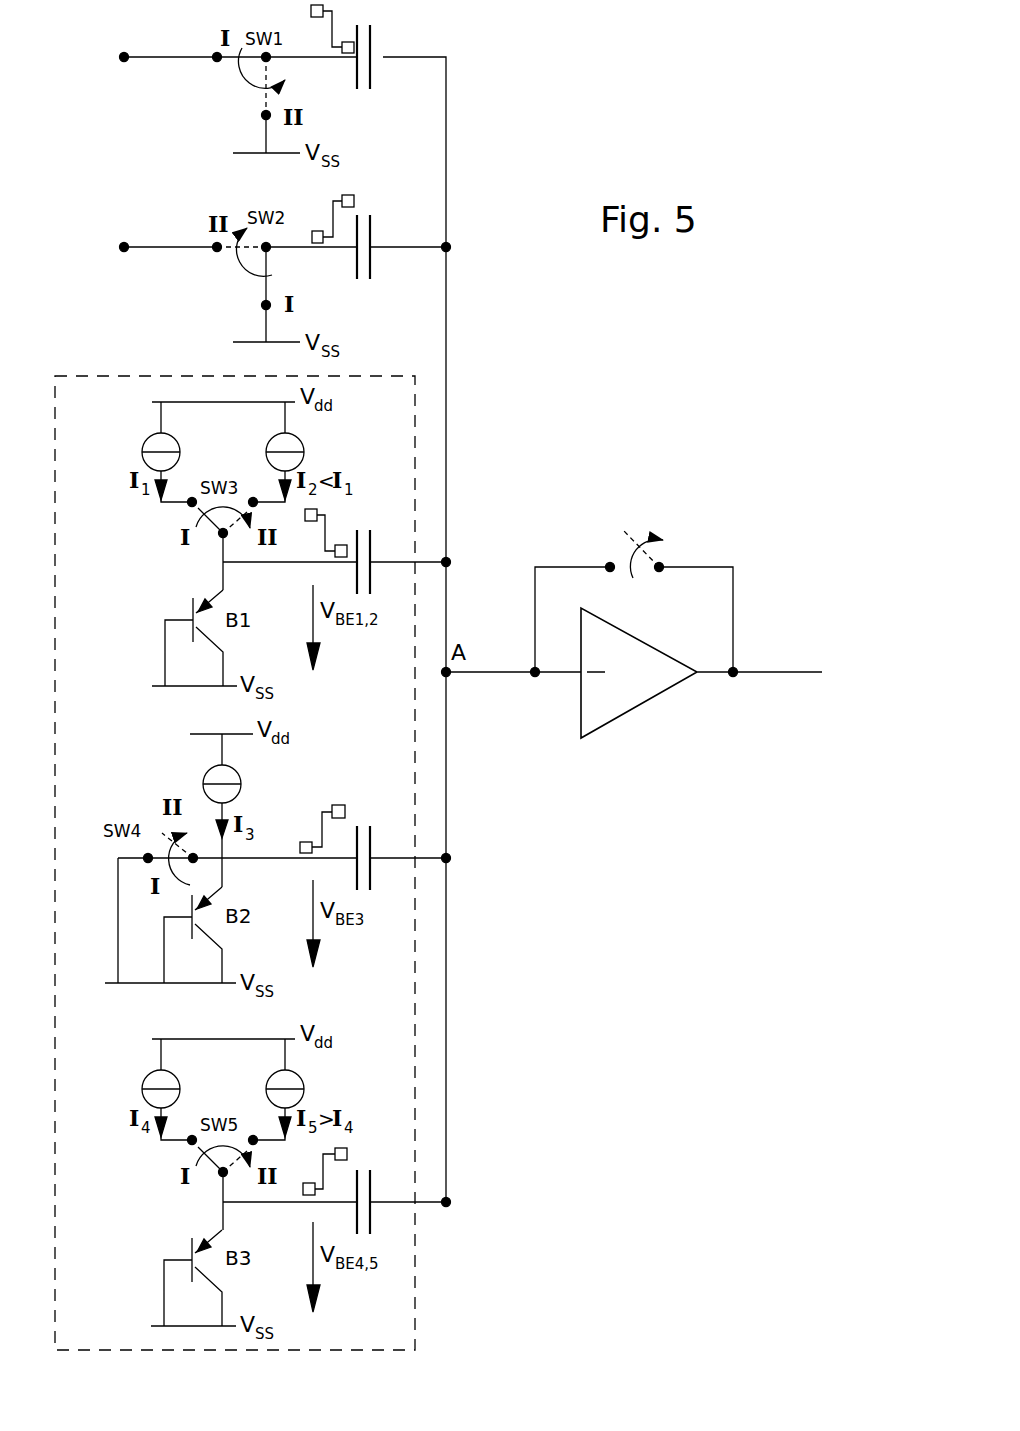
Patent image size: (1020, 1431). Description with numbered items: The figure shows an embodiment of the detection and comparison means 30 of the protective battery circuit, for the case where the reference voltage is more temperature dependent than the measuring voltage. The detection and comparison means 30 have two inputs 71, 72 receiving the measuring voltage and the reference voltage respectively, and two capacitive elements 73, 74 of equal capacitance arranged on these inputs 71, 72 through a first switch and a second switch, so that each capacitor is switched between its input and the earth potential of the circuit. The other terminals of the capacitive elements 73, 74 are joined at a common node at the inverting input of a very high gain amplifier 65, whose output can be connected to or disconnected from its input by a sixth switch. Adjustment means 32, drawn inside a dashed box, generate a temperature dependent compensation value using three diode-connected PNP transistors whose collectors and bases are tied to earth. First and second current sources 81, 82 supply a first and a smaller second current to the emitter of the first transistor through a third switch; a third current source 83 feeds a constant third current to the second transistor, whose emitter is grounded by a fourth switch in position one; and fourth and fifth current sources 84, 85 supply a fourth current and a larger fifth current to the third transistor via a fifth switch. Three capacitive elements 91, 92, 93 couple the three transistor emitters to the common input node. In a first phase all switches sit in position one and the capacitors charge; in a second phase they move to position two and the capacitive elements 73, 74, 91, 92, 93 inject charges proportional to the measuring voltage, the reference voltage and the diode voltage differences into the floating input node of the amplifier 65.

The detection and comparison means 30 is at (586, 417).
The adjustment means 32 is at (80, 374).
The amplifier 65 is at (628, 690).
The input 71 is at (161, 59).
The input 72 is at (161, 249).
The capacitive element 73 is at (388, 38).
The capacitive element 74 is at (392, 215).
The first current source 81 is at (146, 440).
The second current source 82 is at (300, 440).
The third current source 83 is at (237, 771).
The fourth current source 84 is at (146, 1078).
The fifth current source 85 is at (300, 1078).
The capacitive element 91 is at (376, 536).
The capacitive element 92 is at (378, 832).
The capacitive element 93 is at (377, 1174).